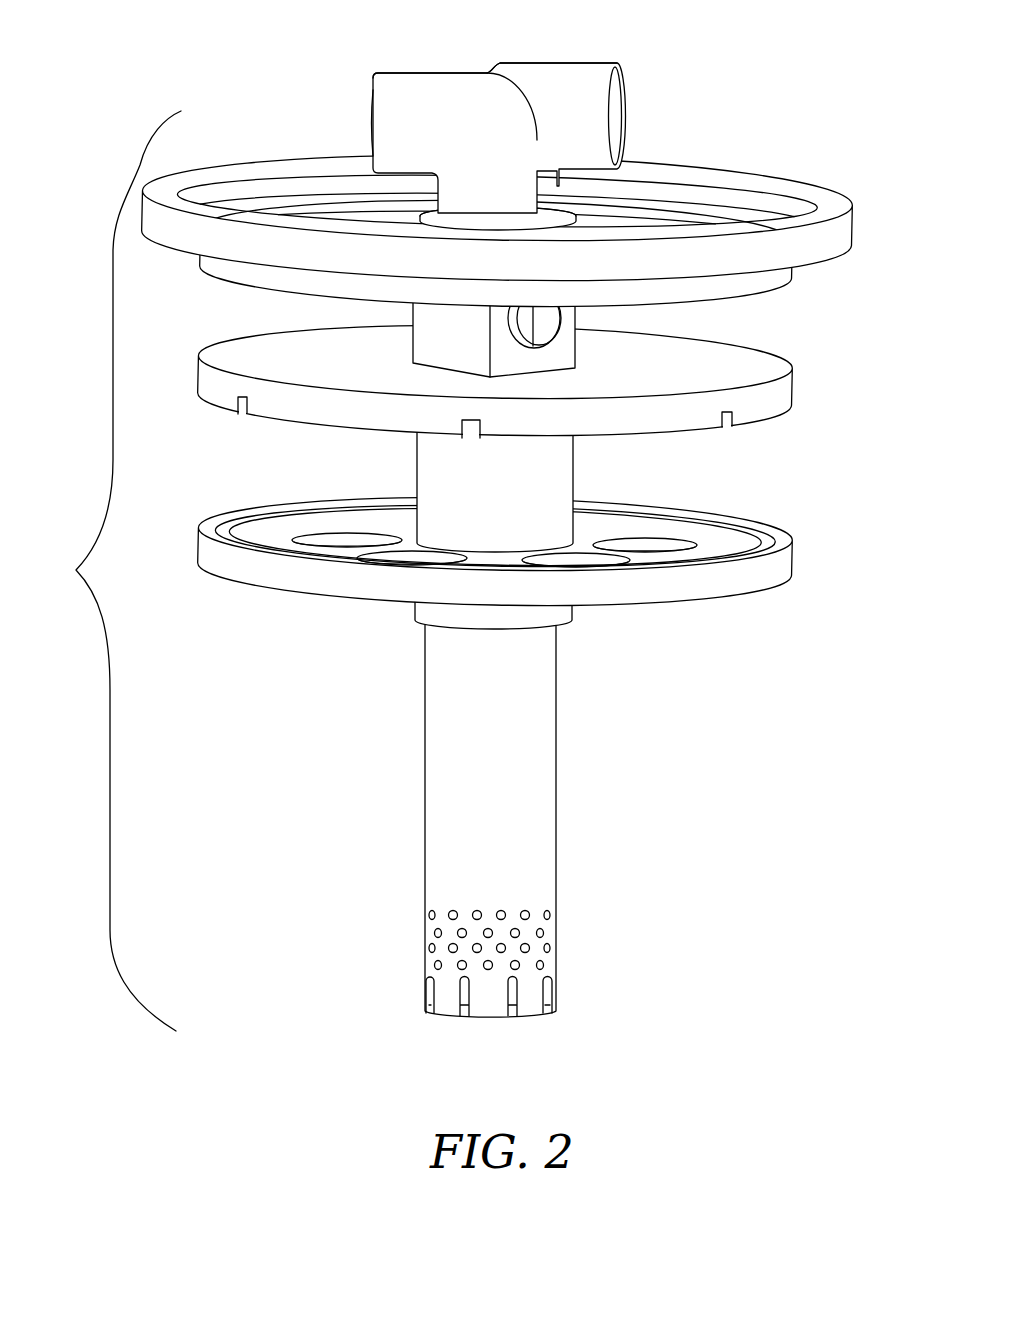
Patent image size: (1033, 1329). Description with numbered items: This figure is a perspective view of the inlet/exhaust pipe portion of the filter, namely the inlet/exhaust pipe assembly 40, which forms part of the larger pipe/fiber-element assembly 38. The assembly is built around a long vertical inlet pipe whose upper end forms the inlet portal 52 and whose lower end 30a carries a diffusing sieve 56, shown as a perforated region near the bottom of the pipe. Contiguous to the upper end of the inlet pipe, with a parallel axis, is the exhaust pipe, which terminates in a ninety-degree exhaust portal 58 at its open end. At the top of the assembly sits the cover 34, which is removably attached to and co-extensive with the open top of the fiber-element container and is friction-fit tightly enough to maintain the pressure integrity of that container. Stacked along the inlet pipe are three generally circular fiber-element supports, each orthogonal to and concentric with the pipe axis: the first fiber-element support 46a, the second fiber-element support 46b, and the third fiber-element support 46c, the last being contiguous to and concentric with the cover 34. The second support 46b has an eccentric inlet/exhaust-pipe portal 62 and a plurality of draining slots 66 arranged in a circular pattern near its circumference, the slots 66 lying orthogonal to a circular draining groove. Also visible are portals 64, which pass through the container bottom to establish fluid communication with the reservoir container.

The lower end of inlet pipe 30a is at (498, 1022).
The cover 34 is at (850, 228).
The pipe/fiber-element assembly 38 is at (483, 58).
The inlet/exhaust pipe assembly 40 is at (111, 571).
The first fiber-element support 46a is at (793, 562).
The second fiber-element support 46b is at (783, 388).
The third fiber-element support 46c is at (795, 285).
The inlet portal 52 is at (353, 100).
The diffusing sieve 56 is at (393, 1018).
The exhaust portal 58 is at (634, 103).
The inlet/exhaust-pipe portal 62 is at (572, 343).
The portals 64 is at (642, 545).
The draining slots 66 is at (235, 431).